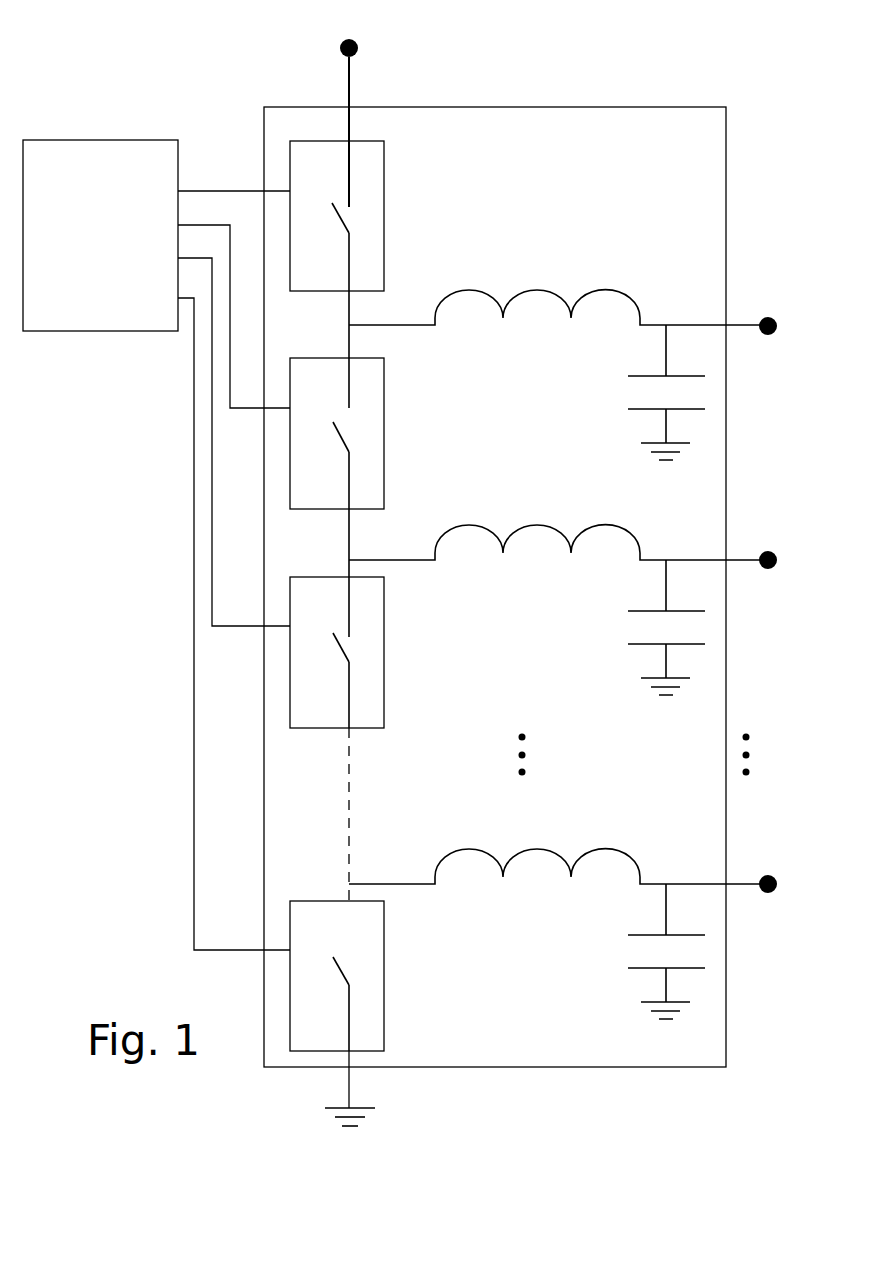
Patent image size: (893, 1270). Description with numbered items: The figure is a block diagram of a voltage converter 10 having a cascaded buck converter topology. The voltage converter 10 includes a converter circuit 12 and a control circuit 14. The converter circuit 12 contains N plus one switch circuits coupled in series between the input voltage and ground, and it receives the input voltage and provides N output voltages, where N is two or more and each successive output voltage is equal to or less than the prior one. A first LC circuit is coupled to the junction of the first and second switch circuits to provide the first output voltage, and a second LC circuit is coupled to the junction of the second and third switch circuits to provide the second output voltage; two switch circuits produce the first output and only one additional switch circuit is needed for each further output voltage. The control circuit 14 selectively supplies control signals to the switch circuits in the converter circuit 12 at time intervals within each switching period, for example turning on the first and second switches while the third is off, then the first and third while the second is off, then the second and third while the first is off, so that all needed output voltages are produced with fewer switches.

The voltage converter 10 is at (194, 57).
The converter circuit 12 is at (533, 107).
The control circuit 14 is at (122, 140).